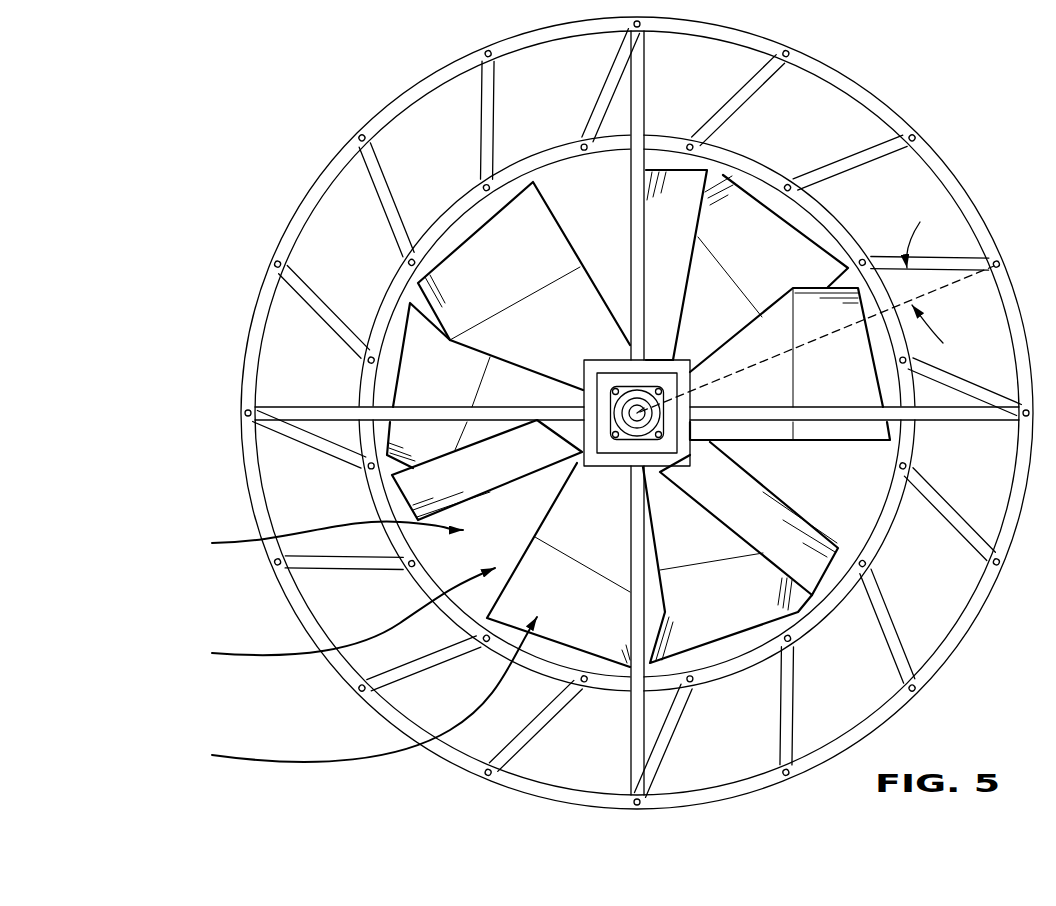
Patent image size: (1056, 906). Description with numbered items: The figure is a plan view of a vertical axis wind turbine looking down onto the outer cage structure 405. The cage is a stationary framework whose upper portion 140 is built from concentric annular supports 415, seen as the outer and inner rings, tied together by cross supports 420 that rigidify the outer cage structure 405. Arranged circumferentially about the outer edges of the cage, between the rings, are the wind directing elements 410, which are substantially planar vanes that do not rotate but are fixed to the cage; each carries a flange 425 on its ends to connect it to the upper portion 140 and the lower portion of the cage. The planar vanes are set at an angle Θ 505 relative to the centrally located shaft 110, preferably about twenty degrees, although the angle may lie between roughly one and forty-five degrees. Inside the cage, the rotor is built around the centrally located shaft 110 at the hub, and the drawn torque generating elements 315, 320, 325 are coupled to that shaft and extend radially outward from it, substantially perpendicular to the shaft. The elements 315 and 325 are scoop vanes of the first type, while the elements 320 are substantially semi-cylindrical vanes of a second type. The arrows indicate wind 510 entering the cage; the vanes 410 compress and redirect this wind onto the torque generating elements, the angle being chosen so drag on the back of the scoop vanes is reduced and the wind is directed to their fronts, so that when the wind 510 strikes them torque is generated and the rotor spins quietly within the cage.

The centrally located shaft 110 is at (633, 407).
The upper portion 140 is at (857, 82).
The torque generating elements 315 is at (515, 275).
The torque generating elements 320 is at (685, 241).
The torque generating elements 325 is at (450, 392).
The outer cage structure 405 is at (348, 90).
The wind directing elements 410 is at (637, 413).
The concentric annular supports 415 is at (932, 147).
The cross supports 420 is at (647, 77).
The flange 425 is at (343, 322).
The angle Θ 505 is at (817, 339).
The wind 510 is at (214, 531).